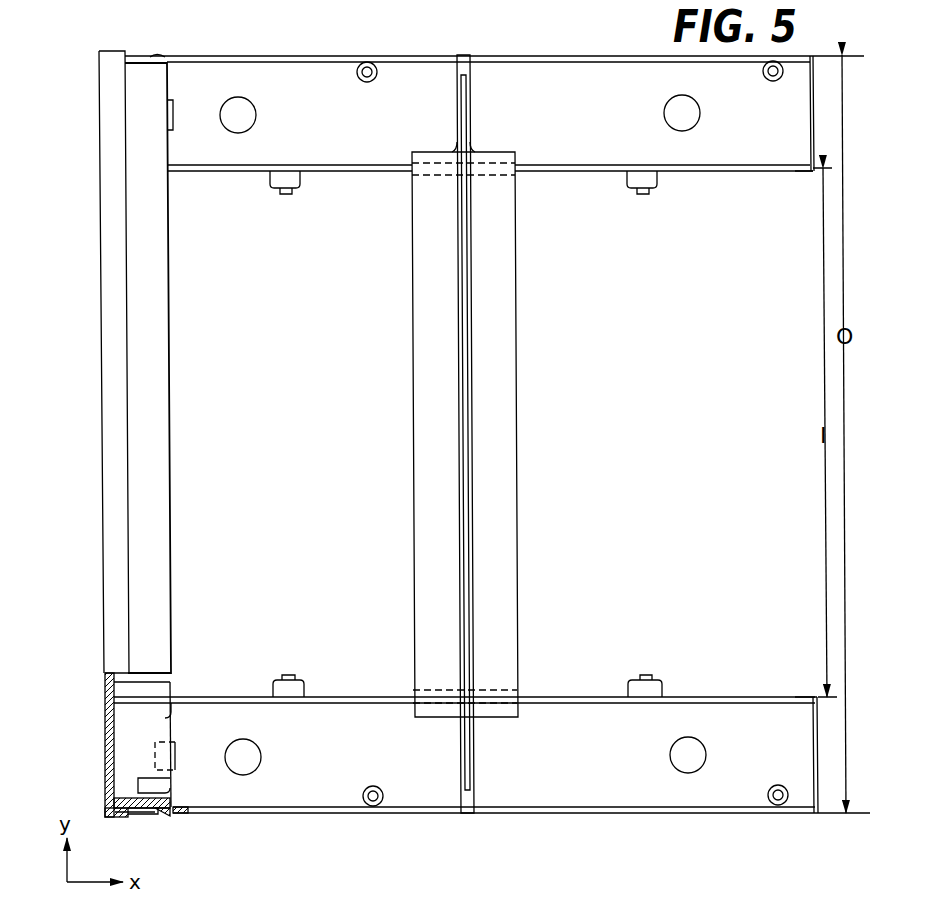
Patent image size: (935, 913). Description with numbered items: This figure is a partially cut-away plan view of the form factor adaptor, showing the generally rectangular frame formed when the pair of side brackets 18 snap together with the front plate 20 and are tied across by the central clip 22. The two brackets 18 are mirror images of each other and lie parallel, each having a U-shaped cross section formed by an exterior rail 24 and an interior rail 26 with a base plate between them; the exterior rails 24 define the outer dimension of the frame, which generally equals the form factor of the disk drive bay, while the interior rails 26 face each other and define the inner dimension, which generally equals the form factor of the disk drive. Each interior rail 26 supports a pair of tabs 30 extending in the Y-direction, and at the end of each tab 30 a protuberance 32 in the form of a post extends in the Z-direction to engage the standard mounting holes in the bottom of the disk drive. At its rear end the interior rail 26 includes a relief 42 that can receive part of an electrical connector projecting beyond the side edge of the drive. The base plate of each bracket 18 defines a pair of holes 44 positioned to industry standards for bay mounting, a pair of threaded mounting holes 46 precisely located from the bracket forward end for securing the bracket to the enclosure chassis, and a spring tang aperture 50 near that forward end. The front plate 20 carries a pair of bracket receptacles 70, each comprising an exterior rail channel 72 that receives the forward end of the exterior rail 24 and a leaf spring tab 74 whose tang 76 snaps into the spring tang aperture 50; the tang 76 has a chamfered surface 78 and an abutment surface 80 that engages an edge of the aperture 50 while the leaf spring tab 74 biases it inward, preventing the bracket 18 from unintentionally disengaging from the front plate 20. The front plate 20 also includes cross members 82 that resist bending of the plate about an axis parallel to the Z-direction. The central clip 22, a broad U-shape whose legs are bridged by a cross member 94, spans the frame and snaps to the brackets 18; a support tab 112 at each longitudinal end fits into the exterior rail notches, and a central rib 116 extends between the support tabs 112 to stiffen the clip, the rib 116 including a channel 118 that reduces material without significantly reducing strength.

The side bracket 18 is at (575, 116).
The front plate 20 is at (120, 265).
The central clip 22 is at (497, 471).
The exterior rail 24 is at (305, 813).
The interior rail 26 is at (722, 172).
The tab 30 is at (298, 178).
The protuberance 32 is at (285, 195).
The relief 42 is at (800, 172).
The hole 44 is at (248, 120).
The threaded mounting hole 46 is at (373, 81).
The spring tang aperture 50 is at (177, 756).
The bracket receptacle 70 is at (97, 700).
The exterior rail channel 72 is at (113, 805).
The leaf spring tab 74 is at (168, 712).
The tang 76 is at (166, 813).
The chamfered surface 78 is at (188, 806).
The abutment surface 80 is at (153, 813).
The cross member 82 is at (155, 360).
The cross member 94 is at (505, 392).
The support tab 112 is at (459, 55).
The central rib 116 is at (470, 312).
The channel 118 is at (465, 570).